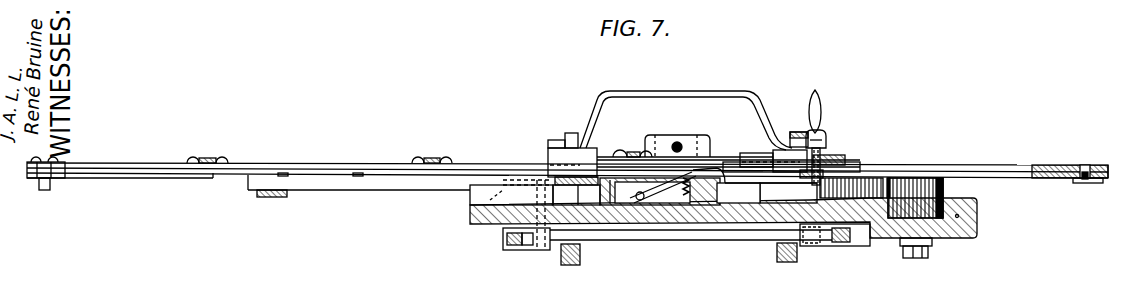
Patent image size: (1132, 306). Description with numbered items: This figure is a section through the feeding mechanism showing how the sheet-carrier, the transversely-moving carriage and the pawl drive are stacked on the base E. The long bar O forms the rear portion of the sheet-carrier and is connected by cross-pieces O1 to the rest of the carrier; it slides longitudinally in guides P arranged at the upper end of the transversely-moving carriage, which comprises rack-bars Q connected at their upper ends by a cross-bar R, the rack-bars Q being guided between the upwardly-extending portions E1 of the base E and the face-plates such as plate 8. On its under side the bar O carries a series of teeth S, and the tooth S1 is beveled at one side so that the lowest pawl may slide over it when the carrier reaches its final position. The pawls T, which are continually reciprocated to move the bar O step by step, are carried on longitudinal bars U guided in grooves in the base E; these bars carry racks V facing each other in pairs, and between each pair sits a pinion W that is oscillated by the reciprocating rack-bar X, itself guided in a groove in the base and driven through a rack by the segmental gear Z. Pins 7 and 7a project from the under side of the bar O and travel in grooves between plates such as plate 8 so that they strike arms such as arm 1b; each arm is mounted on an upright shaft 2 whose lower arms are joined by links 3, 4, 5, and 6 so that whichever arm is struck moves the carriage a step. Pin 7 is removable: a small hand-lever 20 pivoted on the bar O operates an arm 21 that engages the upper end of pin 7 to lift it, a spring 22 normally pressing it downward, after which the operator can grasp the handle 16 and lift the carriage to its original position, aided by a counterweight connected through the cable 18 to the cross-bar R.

The plate 8 is at (305, 182).
The pin 7a is at (50, 183).
The bar O is at (374, 167).
The cross-pieces O1 is at (437, 157).
The teeth S is at (430, 176).
The base E is at (978, 218).
The upwardly-extending portions of the base E1 is at (594, 177).
The pinion W is at (947, 184).
The racks V is at (870, 188).
The rack-bar X is at (957, 216).
The arm 1b is at (511, 215).
The rack-bars Q is at (685, 195).
The pawls T is at (680, 186).
The longitudinal bars U is at (771, 193).
The guides P is at (552, 170).
The cable 18 is at (692, 134).
The tooth S1 is at (675, 149).
The cross-bar R is at (723, 158).
The handle 16 is at (709, 96).
The hand-lever 20 is at (820, 110).
The spring 22 is at (812, 120).
The arm 21 is at (845, 125).
The pin 7 is at (835, 173).
The vertical shaft 2 is at (520, 230).
The link 5 is at (507, 245).
The link 6 is at (522, 247).
The link 4 is at (697, 241).
The link 3 is at (835, 244).
The segmental gear Z is at (850, 244).